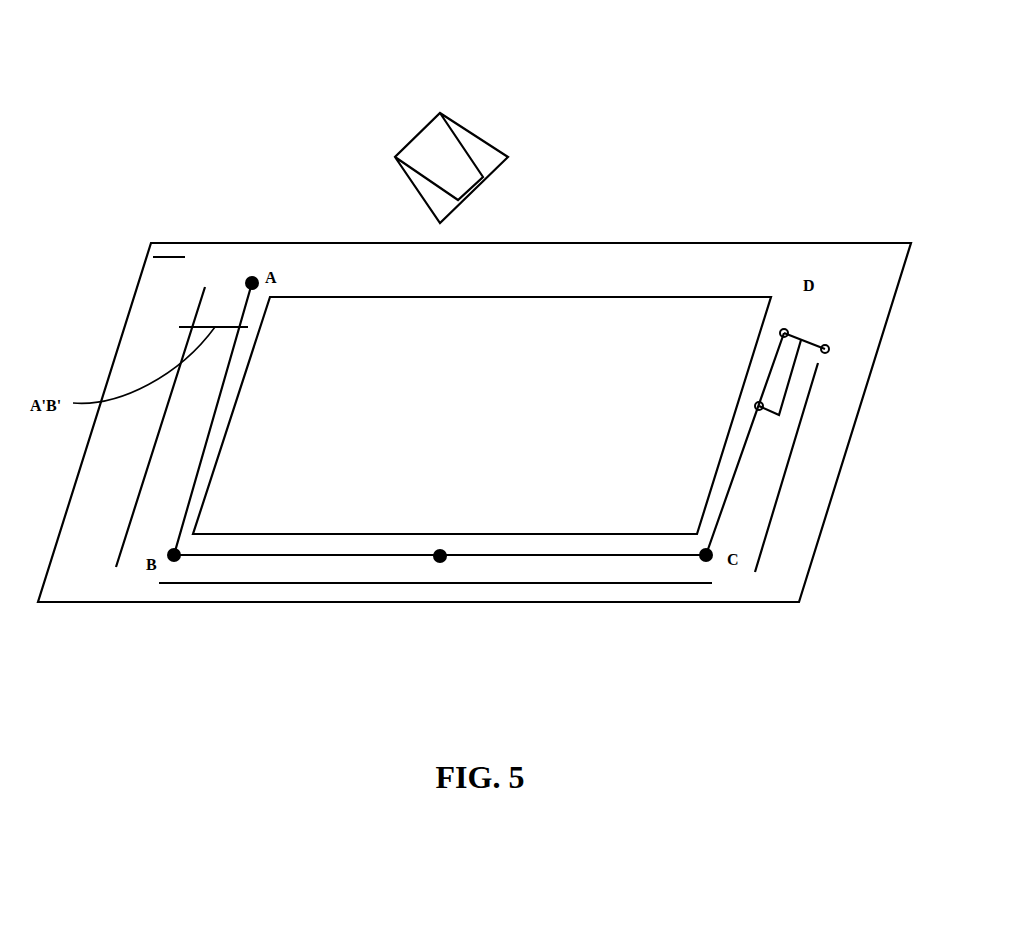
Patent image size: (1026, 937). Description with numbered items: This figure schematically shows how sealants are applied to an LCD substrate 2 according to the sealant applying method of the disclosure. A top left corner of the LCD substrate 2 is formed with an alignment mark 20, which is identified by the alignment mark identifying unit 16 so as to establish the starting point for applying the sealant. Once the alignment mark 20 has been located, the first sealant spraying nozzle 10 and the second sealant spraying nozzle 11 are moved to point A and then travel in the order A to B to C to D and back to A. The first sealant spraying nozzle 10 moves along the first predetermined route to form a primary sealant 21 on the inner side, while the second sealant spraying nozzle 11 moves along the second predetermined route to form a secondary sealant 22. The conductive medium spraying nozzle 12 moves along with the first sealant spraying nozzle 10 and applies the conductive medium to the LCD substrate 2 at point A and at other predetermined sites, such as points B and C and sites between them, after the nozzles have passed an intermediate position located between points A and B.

The LCD substrate 2 is at (618, 260).
The alignment mark 20 is at (163, 270).
The alignment mark identifying unit 16 is at (475, 133).
The primary sealant 21 is at (320, 556).
The secondary sealant 22 is at (498, 582).
The first sealant spraying nozzle 10 is at (784, 329).
The second sealant spraying nozzle 11 is at (826, 345).
The conductive medium spraying nozzle 12 is at (763, 407).